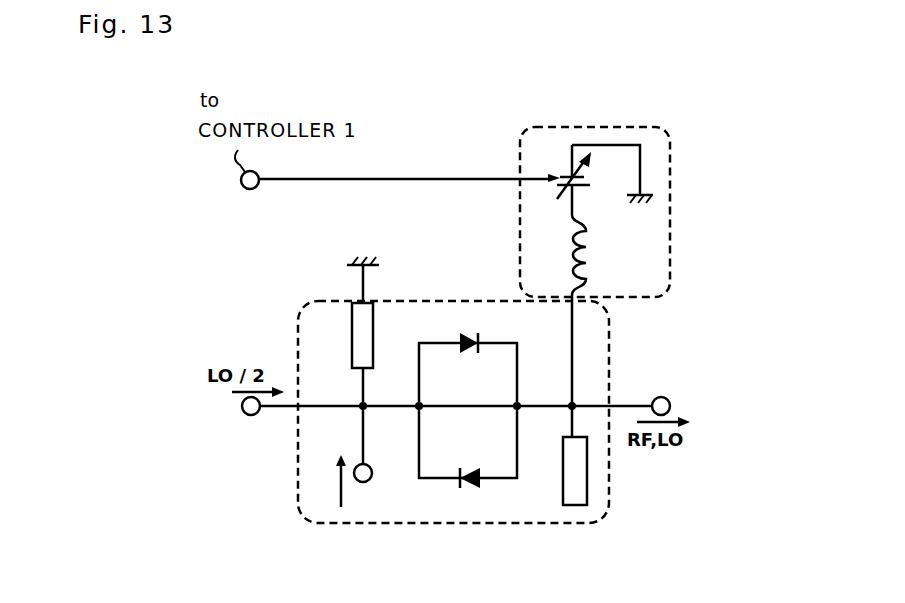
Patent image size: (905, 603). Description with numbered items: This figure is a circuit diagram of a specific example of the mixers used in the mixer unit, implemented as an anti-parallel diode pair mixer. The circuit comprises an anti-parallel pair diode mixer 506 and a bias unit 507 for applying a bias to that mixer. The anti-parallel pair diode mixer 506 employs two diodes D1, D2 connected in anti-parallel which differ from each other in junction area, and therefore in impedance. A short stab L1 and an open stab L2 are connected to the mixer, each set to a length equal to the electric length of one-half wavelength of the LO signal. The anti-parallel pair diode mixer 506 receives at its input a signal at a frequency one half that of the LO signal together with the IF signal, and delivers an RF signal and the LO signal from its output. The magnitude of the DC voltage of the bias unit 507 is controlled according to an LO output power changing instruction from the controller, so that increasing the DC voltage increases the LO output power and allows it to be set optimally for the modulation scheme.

The anti-parallel pair diode mixer 506 is at (456, 421).
The bias unit 507 is at (671, 180).
The short stab L1 is at (374, 328).
The open stab L2 is at (563, 485).
The diode D1 is at (466, 353).
The diode D2 is at (468, 470).